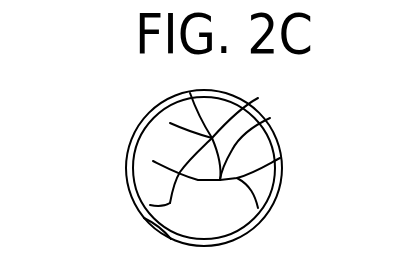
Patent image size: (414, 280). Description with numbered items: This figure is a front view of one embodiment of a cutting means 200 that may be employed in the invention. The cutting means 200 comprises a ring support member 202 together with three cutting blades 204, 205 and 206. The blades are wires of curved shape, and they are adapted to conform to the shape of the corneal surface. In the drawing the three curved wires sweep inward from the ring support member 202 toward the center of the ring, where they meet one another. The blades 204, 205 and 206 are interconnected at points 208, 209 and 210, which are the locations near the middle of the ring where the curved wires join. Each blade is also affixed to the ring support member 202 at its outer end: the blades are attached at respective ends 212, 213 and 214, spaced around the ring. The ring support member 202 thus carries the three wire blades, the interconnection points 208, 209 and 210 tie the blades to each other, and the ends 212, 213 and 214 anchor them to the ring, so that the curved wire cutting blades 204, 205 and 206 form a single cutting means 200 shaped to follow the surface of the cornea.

The cutting means 200 is at (280, 150).
The ring support member 202 is at (272, 187).
The cutting blade 204 is at (258, 98).
The cutting blade 205 is at (150, 205).
The cutting blade 206 is at (258, 208).
The interconnection point 208 is at (170, 123).
The interconnection point 209 is at (153, 161).
The interconnection point 210 is at (270, 118).
The blade end 212 is at (190, 93).
The blade end 213 is at (160, 229).
The blade end 214 is at (280, 158).